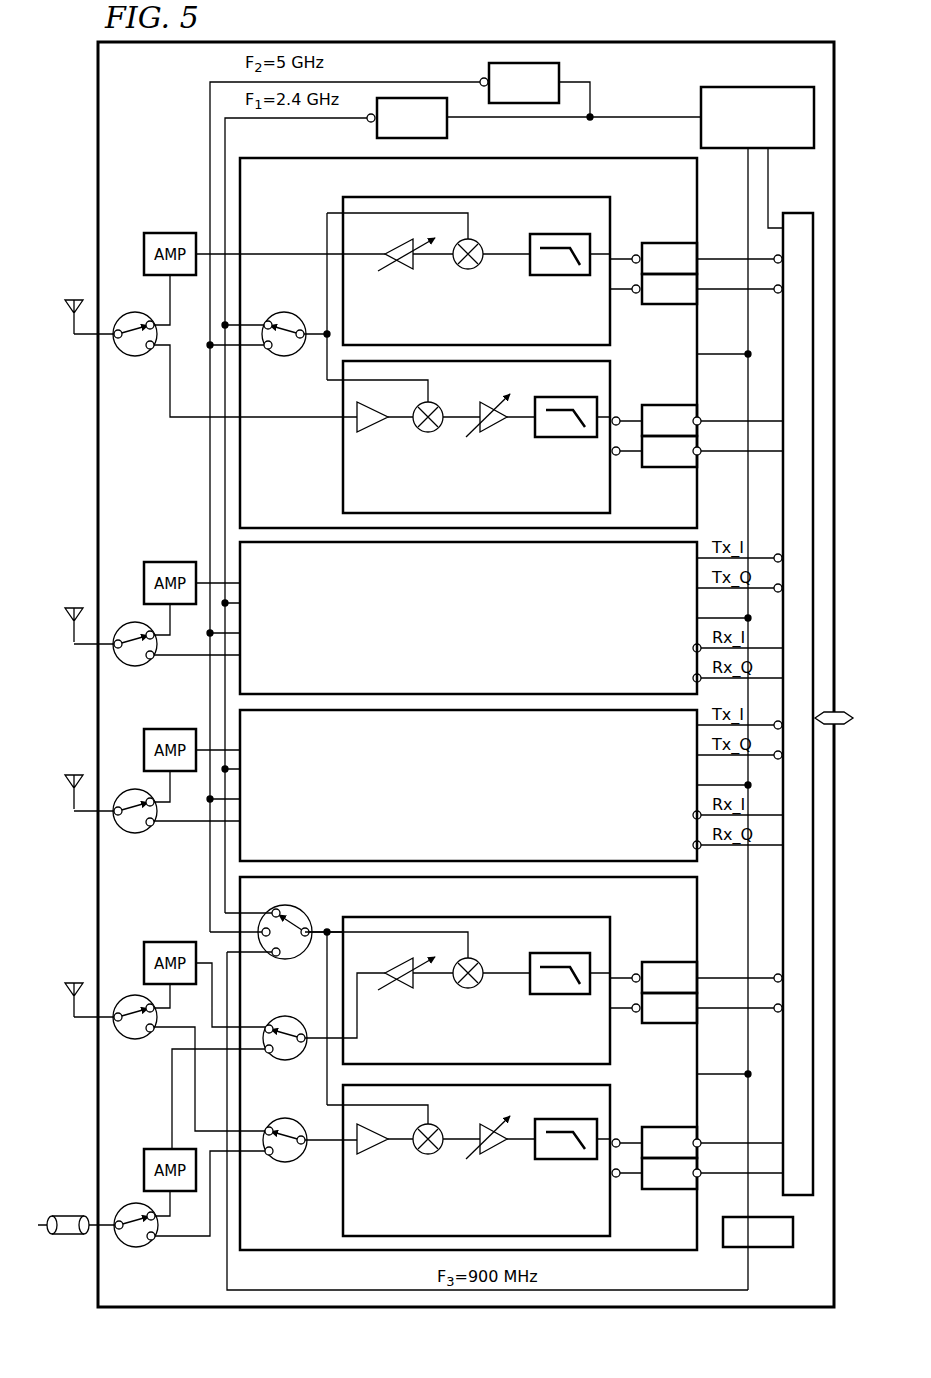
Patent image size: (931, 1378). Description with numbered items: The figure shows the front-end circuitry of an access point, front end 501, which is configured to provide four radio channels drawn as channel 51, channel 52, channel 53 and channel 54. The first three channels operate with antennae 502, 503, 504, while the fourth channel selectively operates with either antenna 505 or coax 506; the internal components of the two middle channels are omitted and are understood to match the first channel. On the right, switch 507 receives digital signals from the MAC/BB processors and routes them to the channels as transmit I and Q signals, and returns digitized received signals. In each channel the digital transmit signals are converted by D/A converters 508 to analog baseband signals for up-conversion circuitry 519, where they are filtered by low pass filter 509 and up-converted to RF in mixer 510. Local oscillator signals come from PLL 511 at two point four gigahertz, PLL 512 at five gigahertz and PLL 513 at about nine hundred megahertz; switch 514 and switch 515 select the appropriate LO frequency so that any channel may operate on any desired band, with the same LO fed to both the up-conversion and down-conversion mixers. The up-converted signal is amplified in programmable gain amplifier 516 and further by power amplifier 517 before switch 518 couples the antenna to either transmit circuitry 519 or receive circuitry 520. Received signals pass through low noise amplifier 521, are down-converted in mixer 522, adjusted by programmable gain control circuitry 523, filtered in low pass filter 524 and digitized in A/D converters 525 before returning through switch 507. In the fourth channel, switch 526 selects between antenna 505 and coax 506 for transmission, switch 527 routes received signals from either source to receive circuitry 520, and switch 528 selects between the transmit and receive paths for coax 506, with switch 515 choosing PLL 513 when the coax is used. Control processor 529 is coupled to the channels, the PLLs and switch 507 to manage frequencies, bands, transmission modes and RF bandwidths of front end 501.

The front end 501 is at (466, 674).
The antenna 502 is at (68, 300).
The antenna 503 is at (68, 608).
The antenna 504 is at (68, 775).
The antenna 505 is at (68, 983).
The coax 506 is at (66, 1240).
The switch 507 is at (797, 213).
The D/A converters 508 is at (668, 243).
The low pass filter 509 is at (560, 276).
The mixer 510 is at (475, 268).
The PLL 511 is at (447, 128).
The PLL 512 is at (559, 70).
The PLL 513 is at (778, 1248).
The switch 514 is at (282, 312).
The switch 515 is at (283, 960).
The programmable gain amplifier 516 is at (403, 268).
The power amplifier 517 is at (165, 233).
The switch 518 is at (138, 356).
The up-conversion circuitry 519 is at (617, 319).
The receive circuitry 520 is at (617, 484).
The low noise amplifier 521 is at (375, 428).
The mixer 522 is at (435, 431).
The programmable gain control circuitry 523 is at (500, 430).
The low pass filter 524 is at (566, 438).
The A/D converters 525 is at (668, 405).
The switch 526 is at (285, 1061).
The switch 527 is at (285, 1162).
The switch 528 is at (136, 1247).
The control processor 529 is at (701, 101).
The channel 1 51 is at (468, 343).
The channel 2 52 is at (468, 618).
The channel 3 53 is at (468, 785).
The channel 4 54 is at (468, 1063).